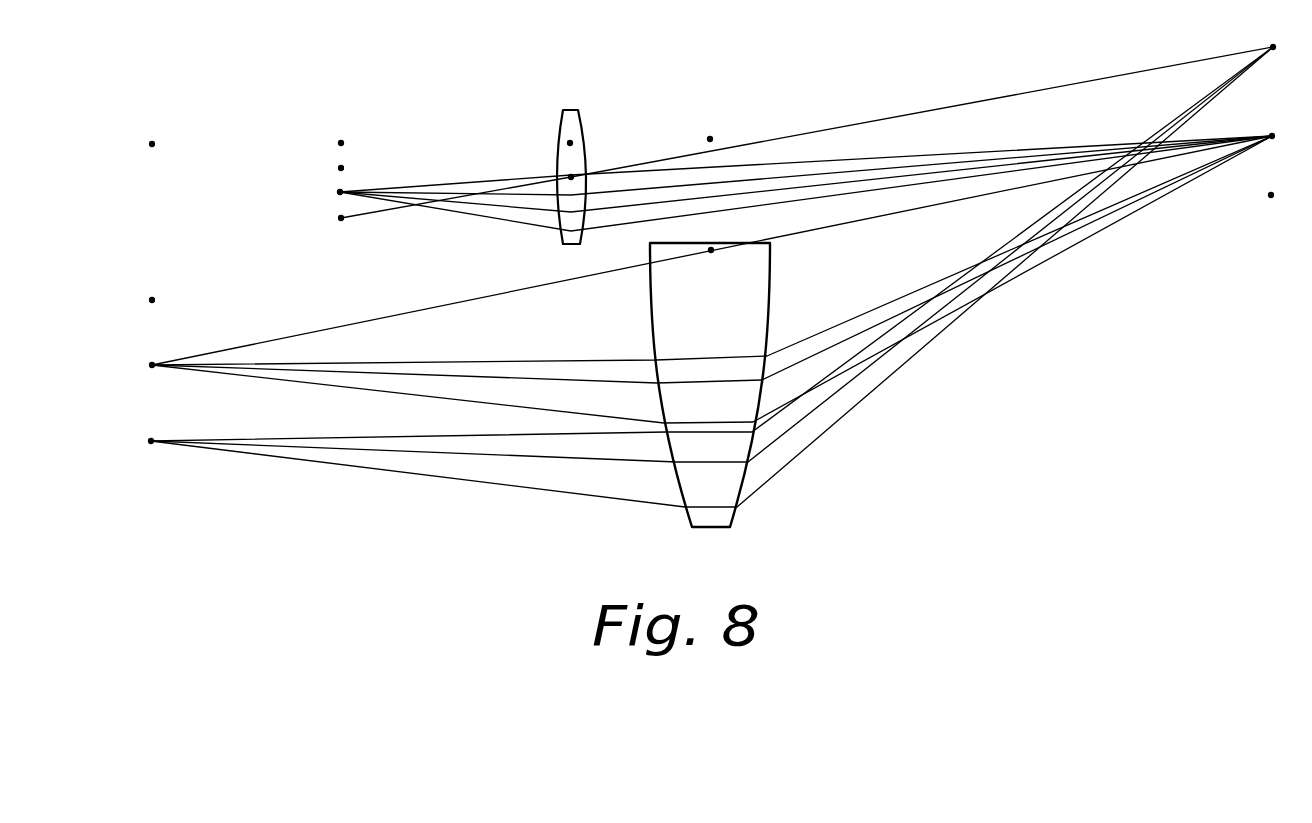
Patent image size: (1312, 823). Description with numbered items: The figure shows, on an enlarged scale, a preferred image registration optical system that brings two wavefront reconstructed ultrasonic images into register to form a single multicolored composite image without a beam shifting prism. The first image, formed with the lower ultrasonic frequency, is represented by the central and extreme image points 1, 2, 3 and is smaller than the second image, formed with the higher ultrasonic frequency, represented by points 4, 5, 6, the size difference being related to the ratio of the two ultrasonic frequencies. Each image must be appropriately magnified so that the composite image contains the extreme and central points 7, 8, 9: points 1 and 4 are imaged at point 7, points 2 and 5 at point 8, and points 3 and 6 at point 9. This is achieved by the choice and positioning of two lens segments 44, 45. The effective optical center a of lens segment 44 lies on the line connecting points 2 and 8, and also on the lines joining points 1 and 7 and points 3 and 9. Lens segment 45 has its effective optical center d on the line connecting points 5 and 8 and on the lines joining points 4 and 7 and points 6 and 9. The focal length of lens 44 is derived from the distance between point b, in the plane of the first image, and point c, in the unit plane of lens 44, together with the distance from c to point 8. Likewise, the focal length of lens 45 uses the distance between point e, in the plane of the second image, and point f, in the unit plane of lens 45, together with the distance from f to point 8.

The image point 1 is at (329, 219).
The image point 2 is at (327, 191).
The image point 3 is at (328, 165).
The image point 4 is at (138, 443).
The image point 5 is at (139, 367).
The image point 6 is at (139, 301).
The composite image point 7 is at (1286, 50).
The composite image point 8 is at (1284, 140).
The composite image point 9 is at (1285, 197).
The lens segment 44 is at (582, 113).
The lens segment 45 is at (735, 518).
The effective optical center a is at (567, 164).
The point b is at (328, 140).
The point c is at (568, 130).
The effective optical center d is at (724, 267).
The point e is at (140, 143).
The point f is at (698, 139).